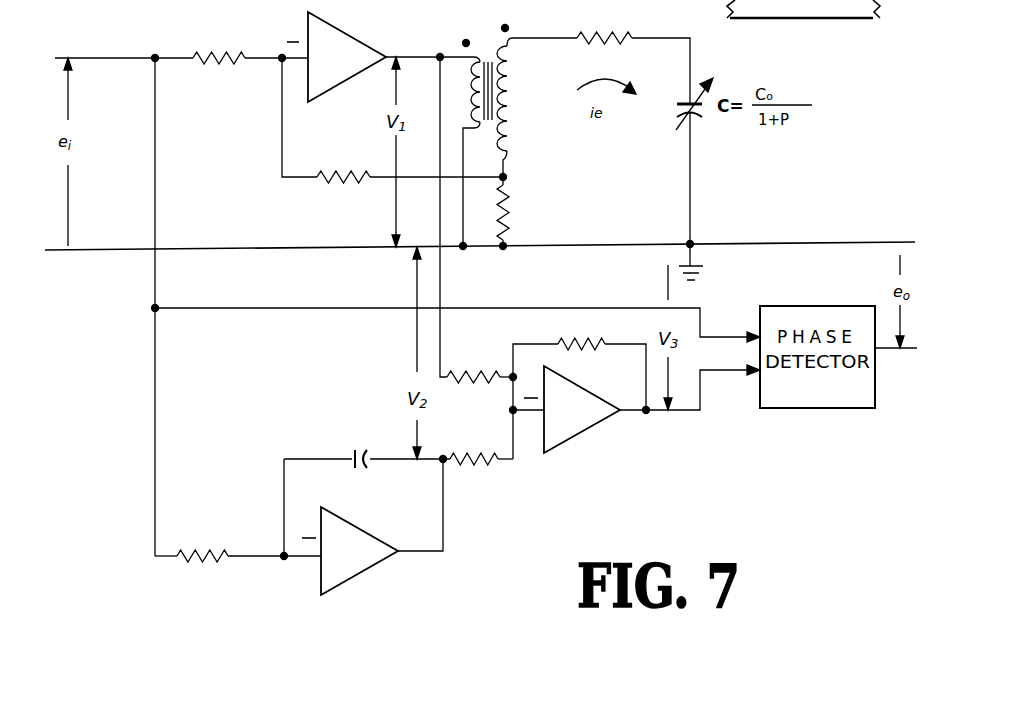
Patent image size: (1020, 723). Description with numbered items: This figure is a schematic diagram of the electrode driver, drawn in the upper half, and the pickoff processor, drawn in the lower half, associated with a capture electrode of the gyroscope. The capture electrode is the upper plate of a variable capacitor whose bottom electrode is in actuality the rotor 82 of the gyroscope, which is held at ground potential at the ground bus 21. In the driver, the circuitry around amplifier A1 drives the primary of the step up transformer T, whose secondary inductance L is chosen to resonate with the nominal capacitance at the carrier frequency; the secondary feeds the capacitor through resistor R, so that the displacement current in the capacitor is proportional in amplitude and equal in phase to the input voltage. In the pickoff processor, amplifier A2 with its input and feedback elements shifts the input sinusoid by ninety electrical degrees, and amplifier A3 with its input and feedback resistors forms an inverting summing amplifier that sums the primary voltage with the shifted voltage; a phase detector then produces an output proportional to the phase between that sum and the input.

The bus 21 is at (820, 18).
The rotor 82 is at (705, 112).
The amplifier A1 is at (336, 57).
The amplifier A2 is at (350, 551).
The amplifier A3 is at (572, 409).
The step up transformer T is at (494, 127).
The secondary inductance L is at (513, 98).
The resistor R is at (604, 25).